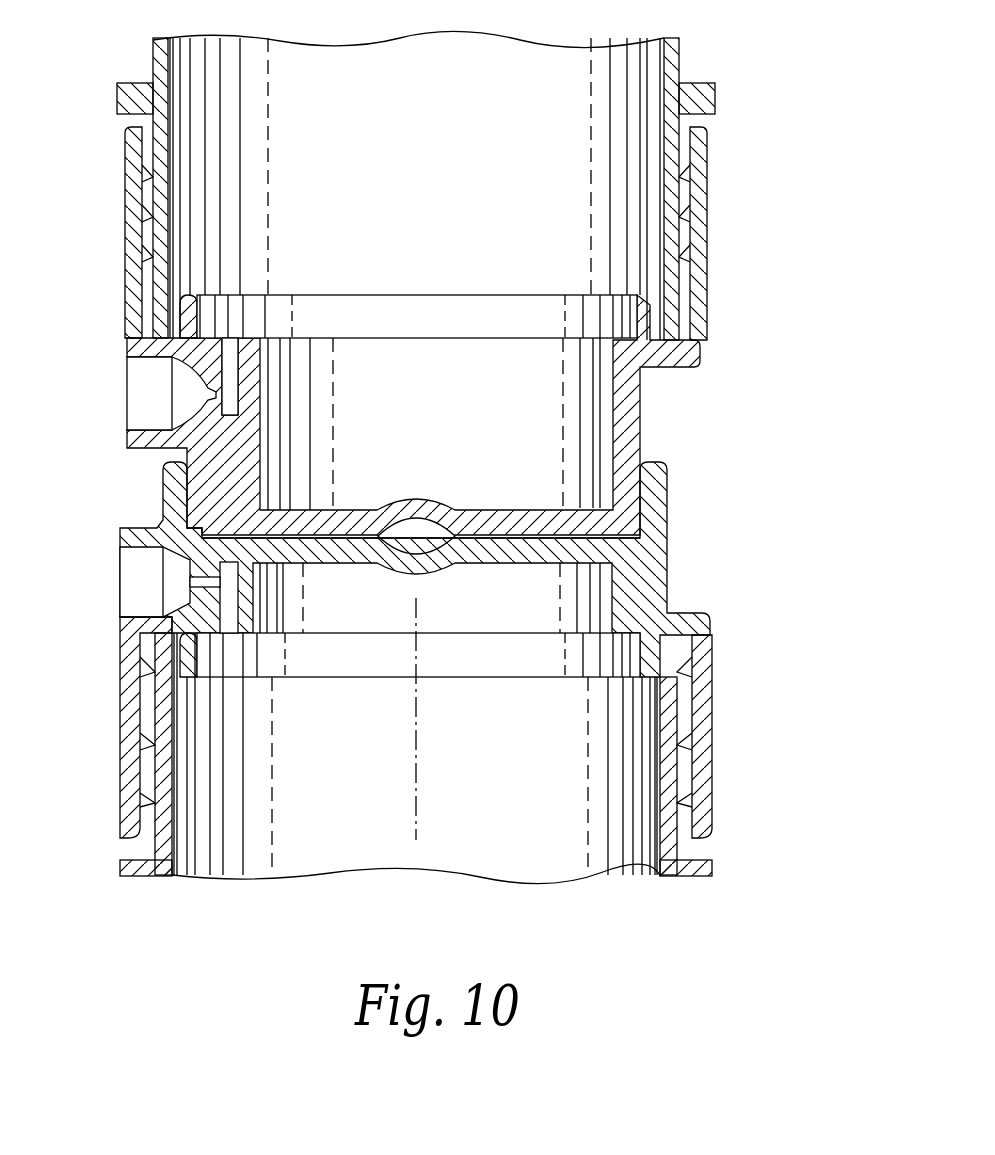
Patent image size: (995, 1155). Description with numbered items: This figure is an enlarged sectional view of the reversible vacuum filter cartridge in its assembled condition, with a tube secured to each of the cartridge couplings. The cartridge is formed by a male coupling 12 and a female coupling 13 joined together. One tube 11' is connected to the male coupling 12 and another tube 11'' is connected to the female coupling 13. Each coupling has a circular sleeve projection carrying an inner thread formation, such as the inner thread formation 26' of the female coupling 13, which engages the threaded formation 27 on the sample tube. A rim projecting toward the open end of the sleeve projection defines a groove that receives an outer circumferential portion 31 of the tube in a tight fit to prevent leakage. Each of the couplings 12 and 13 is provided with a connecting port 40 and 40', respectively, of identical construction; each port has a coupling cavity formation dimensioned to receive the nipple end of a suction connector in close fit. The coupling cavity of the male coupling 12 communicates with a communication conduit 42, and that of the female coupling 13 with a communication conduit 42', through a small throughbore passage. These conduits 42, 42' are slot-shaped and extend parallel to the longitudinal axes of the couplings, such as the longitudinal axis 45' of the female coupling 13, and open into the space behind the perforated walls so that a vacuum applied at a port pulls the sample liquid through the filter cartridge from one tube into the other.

The tube 11' is at (454, 185).
The tube 11'' is at (484, 758).
The male coupling 12 is at (707, 258).
The female coupling 13 is at (713, 683).
The connecting port 40 is at (136, 385).
The connecting port 40' is at (123, 572).
The communication conduit 42 is at (296, 376).
The communication conduit 42' is at (267, 597).
The outer circumferential portion 31 is at (155, 658).
The threaded formation 27 is at (153, 743).
The inner thread formation 26' is at (413, 754).
The longitudinal axis 45' is at (470, 719).